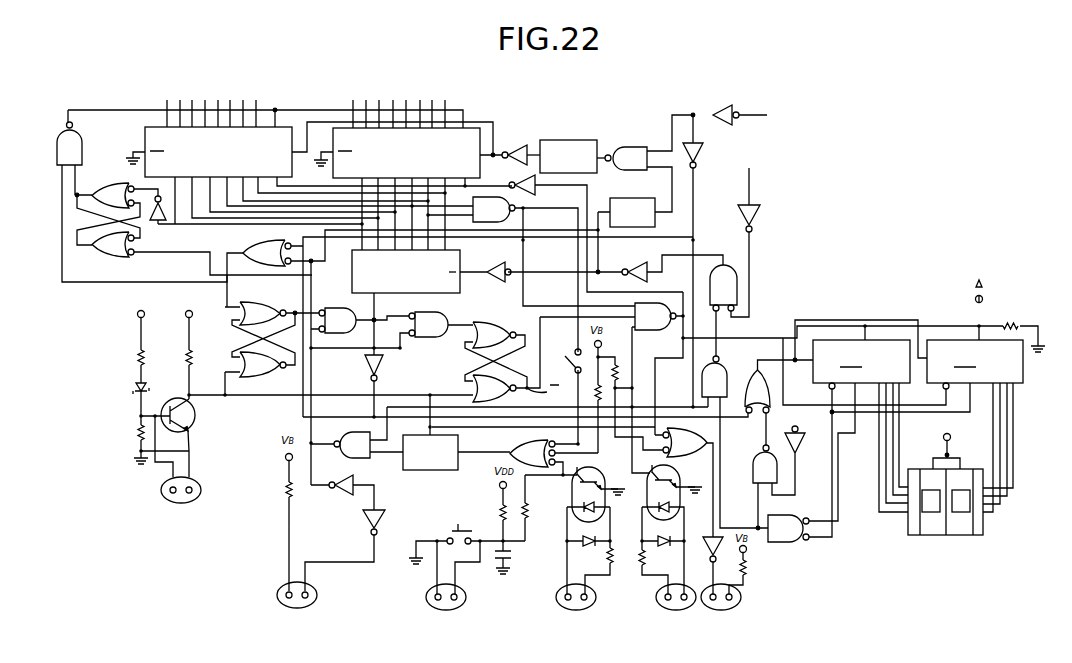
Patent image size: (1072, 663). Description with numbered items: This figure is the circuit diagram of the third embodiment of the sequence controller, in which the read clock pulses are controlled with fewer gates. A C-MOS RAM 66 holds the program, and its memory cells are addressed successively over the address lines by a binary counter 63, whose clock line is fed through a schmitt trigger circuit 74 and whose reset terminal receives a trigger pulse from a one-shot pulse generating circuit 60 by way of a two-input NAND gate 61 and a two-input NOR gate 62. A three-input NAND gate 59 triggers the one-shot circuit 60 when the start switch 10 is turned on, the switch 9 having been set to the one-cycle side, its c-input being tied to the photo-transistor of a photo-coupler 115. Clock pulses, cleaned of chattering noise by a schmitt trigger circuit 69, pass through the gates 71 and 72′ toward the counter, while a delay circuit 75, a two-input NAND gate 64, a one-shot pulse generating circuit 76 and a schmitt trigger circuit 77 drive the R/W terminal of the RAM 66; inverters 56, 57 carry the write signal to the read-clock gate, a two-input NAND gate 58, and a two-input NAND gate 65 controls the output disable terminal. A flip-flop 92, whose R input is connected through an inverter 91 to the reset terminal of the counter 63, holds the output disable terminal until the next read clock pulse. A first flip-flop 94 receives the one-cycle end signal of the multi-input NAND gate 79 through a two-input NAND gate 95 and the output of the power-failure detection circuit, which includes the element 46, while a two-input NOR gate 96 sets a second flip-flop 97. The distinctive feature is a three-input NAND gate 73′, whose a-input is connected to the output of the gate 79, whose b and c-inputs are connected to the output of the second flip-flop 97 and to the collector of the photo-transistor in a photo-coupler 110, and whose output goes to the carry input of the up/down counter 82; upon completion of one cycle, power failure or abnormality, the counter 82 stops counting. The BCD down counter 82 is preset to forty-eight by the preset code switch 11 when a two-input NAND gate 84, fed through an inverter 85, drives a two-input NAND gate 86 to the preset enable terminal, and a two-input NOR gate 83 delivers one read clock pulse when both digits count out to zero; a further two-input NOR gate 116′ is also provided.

The 2-input NAND gate 65 is at (137, 202).
The C-MOS RAM 66 is at (303, 152).
The flip-flop 92 is at (193, 223).
The 2-input NAND gate 95 is at (460, 323).
The 3-input NAND gate 79 is at (584, 274).
The schmitt trigger circuit 77 is at (511, 150).
The one-shot pulse generating circuit 76 is at (575, 156).
The 2-input NAND gate 64 is at (653, 163).
The inverter 56 is at (725, 118).
The inverter 57 is at (702, 275).
The delay circuit 75 is at (626, 235).
The schmitt trigger circuit 69 is at (752, 242).
The inverter 72′ is at (626, 269).
The 2-input NAND gate 71 is at (723, 310).
The schmitt trigger circuit 74 is at (485, 281).
The 3-input NAND gate 73′ is at (771, 363).
The binary counter 63 is at (406, 302).
The 2-input NOR gate 62 is at (352, 320).
The inverter 91 is at (365, 365).
The 2-input NOR gate 96 is at (391, 331).
The second flip-flop 97 is at (373, 372).
The first flip-flop 94 is at (252, 341).
The transistor 46 is at (196, 426).
The switch 9 is at (566, 357).
The 2-input NAND gate 58 is at (728, 442).
The 2-input NAND gate 86 is at (830, 370).
The down counter 82 is at (929, 396).
The inverter 85 is at (804, 447).
The 2-input NAND gate 84 is at (759, 471).
The 2-input NOR gate 83 is at (869, 462).
The gate 116′ is at (684, 482).
The 2-input NAND gate 61 is at (509, 432).
The one-shot pulse generating circuit 60 is at (525, 437).
The 3-input NAND gate 59 is at (554, 423).
The start switch 10 is at (454, 527).
The photo-coupler 115 is at (572, 485).
The photo-coupler 110 is at (647, 486).
The preset code switch 11 is at (962, 547).